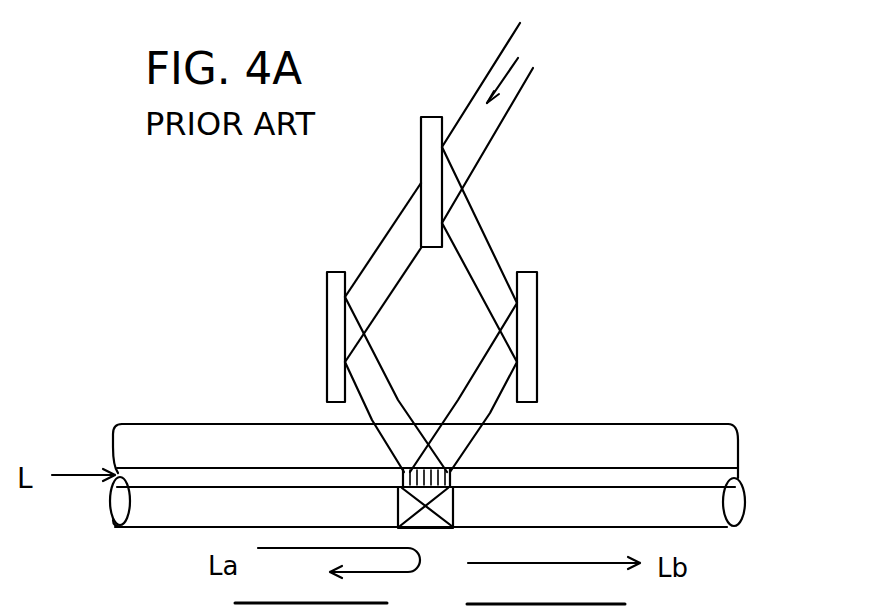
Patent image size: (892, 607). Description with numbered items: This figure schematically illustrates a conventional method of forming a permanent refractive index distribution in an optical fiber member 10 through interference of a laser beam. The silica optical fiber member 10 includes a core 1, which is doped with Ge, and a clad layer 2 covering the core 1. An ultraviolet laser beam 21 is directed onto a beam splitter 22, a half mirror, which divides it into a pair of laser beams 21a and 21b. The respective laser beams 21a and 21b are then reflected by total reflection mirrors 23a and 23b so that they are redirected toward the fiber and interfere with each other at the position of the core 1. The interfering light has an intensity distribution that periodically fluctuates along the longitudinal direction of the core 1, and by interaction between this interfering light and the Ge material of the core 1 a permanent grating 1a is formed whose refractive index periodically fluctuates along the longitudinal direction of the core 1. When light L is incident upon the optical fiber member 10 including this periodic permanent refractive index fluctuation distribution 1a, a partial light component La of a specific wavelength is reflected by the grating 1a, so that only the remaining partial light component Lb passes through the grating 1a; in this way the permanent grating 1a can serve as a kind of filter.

The ultraviolet laser beam 21 is at (533, 76).
The beam splitter 22 is at (427, 165).
The laser beam 21a is at (385, 274).
The laser beam 21b is at (477, 245).
The total reflection mirror 23a is at (337, 338).
The total reflection mirror 23b is at (527, 340).
The optical fiber member 10 is at (495, 515).
The clad layer 2 is at (727, 457).
The core 1 is at (720, 480).
The permanent grating 1a is at (433, 488).